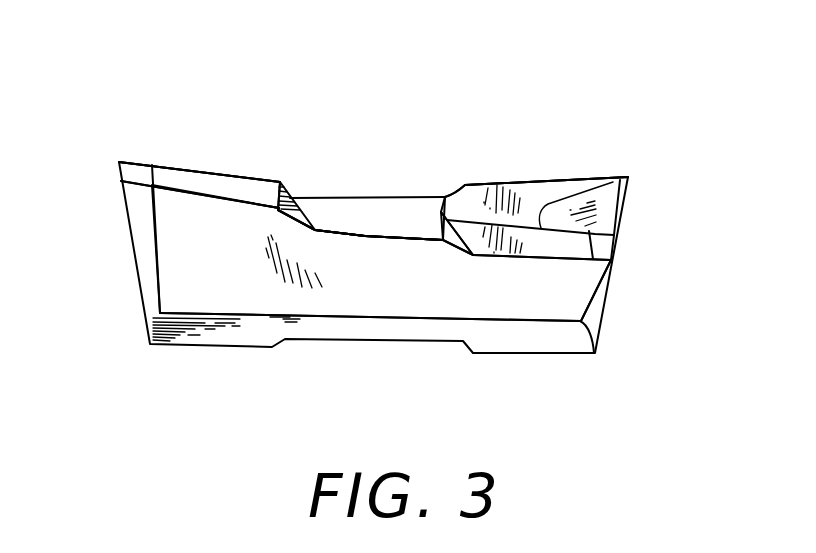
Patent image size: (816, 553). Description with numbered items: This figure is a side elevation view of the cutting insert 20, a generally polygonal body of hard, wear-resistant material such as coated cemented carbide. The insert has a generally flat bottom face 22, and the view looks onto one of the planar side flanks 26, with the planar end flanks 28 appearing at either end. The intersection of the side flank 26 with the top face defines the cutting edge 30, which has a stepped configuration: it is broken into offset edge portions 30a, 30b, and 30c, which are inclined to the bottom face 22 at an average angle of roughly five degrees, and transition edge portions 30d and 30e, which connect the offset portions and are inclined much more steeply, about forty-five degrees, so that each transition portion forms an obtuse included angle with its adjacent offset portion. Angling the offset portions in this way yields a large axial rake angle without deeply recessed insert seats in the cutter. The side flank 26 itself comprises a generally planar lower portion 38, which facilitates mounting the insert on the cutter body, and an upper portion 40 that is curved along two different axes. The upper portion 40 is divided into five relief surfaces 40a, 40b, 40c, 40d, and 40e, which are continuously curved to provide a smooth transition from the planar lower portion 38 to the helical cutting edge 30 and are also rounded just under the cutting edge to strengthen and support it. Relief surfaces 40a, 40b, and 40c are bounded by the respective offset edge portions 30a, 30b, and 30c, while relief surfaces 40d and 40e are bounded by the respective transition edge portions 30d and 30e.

The cutting insert 20 is at (125, 98).
The bottom face 22 is at (560, 355).
The side flanks 26 is at (572, 296).
The end flanks 28 is at (135, 251).
The cutting edge 30 is at (616, 168).
The offset edge portion 30a is at (215, 170).
The offset edge portion 30b is at (327, 197).
The offset edge portion 30c is at (548, 204).
The transition edge portion 30d is at (293, 178).
The transition edge portion 30e is at (466, 192).
The planar lower portion 38 is at (173, 288).
The upper portion 40 is at (350, 208).
The relief surface 40a is at (168, 180).
The relief surface 40b is at (395, 230).
The relief surface 40c is at (542, 245).
The relief surface 40d is at (290, 229).
The relief surface 40e is at (453, 236).